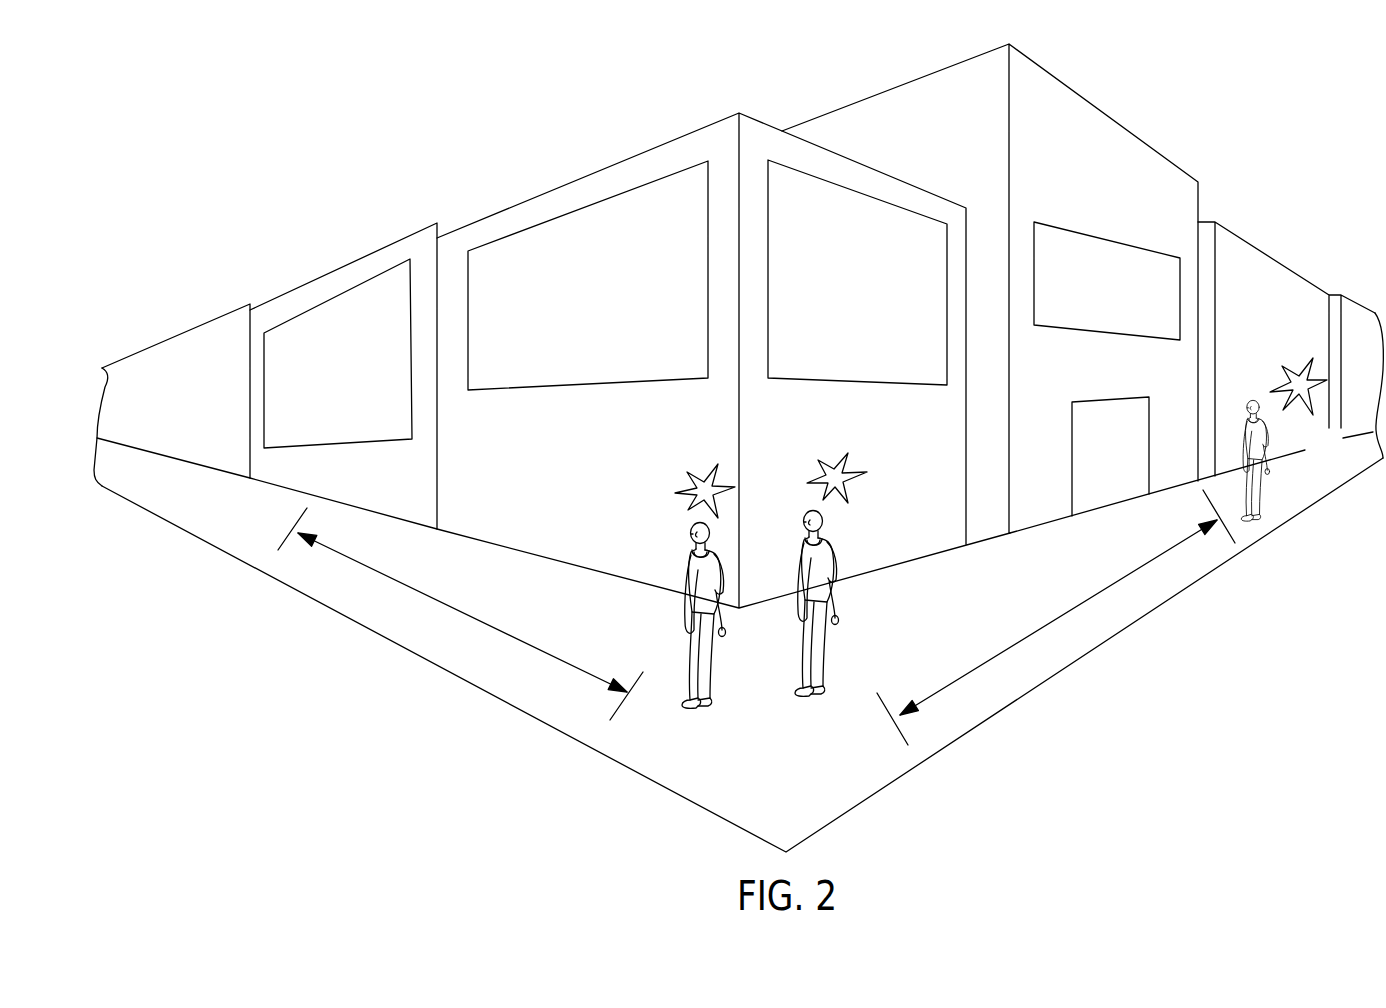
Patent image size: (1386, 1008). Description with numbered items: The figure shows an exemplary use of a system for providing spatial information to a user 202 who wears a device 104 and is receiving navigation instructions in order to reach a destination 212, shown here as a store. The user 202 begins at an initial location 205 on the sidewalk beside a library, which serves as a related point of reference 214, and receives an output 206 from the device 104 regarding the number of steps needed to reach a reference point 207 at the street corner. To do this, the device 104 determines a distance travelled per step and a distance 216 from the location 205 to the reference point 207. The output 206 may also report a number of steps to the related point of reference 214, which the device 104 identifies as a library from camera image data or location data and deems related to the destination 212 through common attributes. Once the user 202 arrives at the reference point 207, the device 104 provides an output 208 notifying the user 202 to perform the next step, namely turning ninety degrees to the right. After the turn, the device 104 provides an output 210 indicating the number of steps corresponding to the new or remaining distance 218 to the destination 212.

The device 104 is at (700, 568).
The user 202 is at (722, 663).
The initial location 205 is at (1220, 517).
The output 206 is at (1323, 380).
The reference point 207 is at (782, 750).
The output 208 is at (852, 493).
The output 210 is at (678, 490).
The destination 212 is at (343, 313).
The related point of reference 214 is at (1125, 190).
The distance 216 is at (1046, 626).
The remaining distance 218 is at (462, 614).